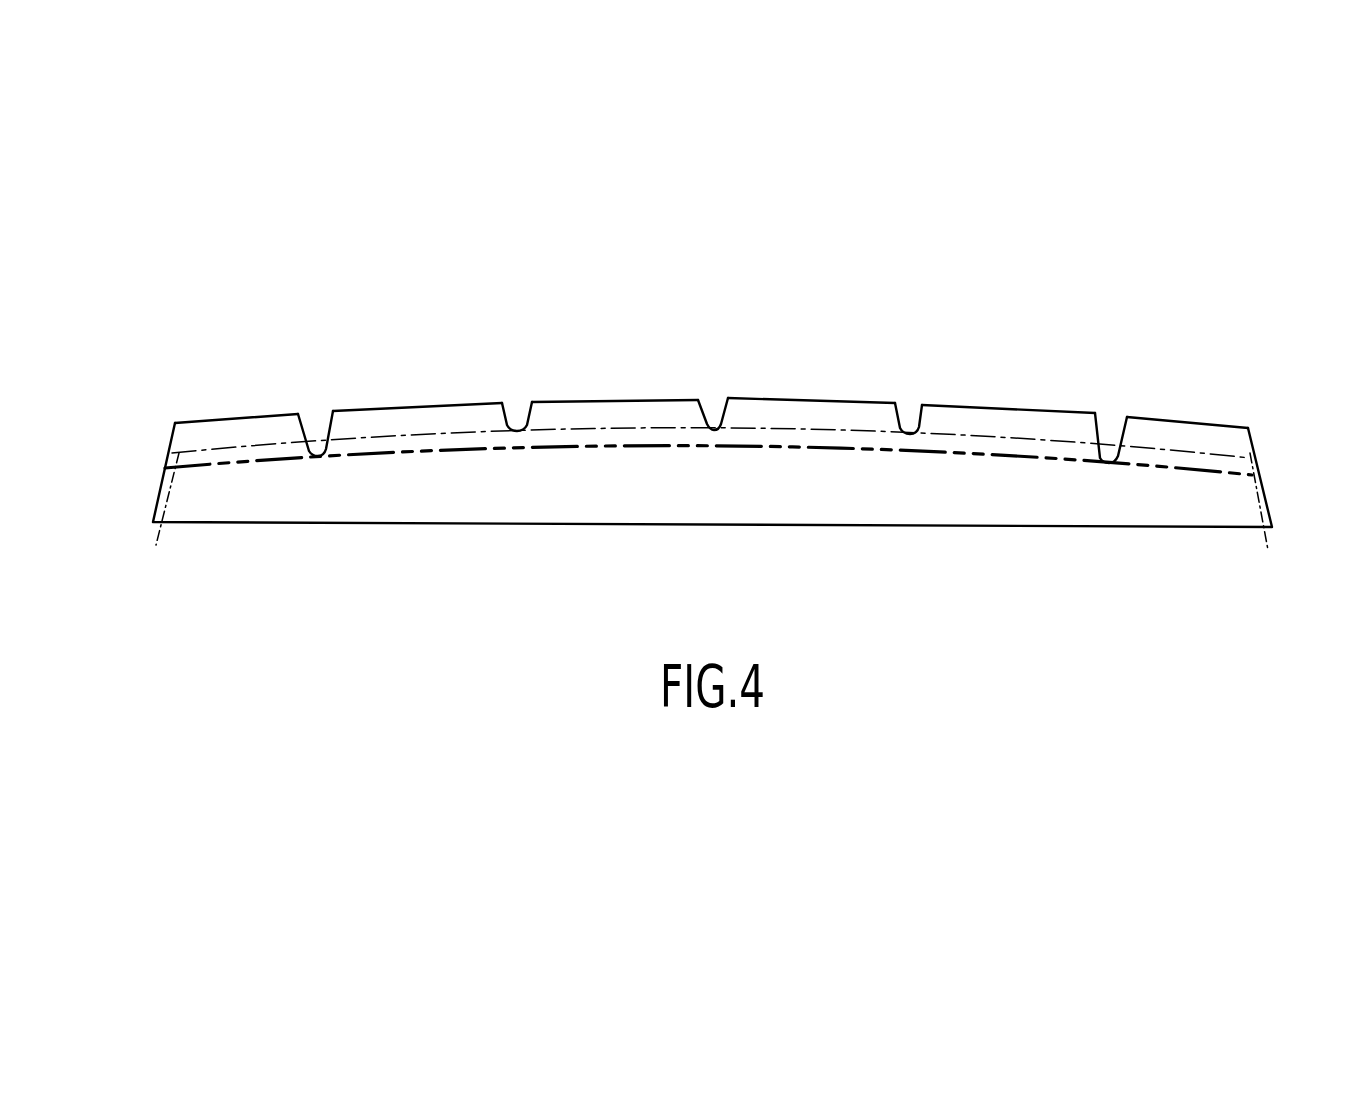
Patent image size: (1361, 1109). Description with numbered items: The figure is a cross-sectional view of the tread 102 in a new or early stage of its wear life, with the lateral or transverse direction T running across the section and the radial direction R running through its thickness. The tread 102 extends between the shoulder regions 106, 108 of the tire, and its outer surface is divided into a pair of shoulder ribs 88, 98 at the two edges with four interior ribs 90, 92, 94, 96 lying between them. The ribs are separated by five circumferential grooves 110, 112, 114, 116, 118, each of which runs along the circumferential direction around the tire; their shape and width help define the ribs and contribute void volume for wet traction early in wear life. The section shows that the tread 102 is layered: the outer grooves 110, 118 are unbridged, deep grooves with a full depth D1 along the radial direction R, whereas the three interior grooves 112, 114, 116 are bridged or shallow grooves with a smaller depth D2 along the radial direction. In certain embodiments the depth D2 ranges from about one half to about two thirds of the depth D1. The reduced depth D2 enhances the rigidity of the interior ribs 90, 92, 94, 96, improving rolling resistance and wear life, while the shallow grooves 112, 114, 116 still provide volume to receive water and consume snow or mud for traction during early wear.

The tread 102 is at (178, 377).
The shoulder rib 88 is at (237, 428).
The interior rib 90 is at (427, 417).
The interior rib 92 is at (640, 413).
The interior rib 94 is at (807, 412).
The interior rib 96 is at (1000, 420).
The shoulder rib 98 is at (1183, 432).
The circumferential groove 110 is at (315, 417).
The circumferential groove 112 is at (515, 405).
The circumferential groove 114 is at (710, 405).
The circumferential groove 116 is at (907, 405).
The circumferential groove 118 is at (1105, 415).
The shoulder region 106 is at (148, 548).
The shoulder region 108 is at (1268, 565).
The full depth D1 is at (163, 468).
The depth D2 is at (1217, 457).
The lateral or transverse direction T is at (807, 573).
The radial direction R is at (1338, 408).